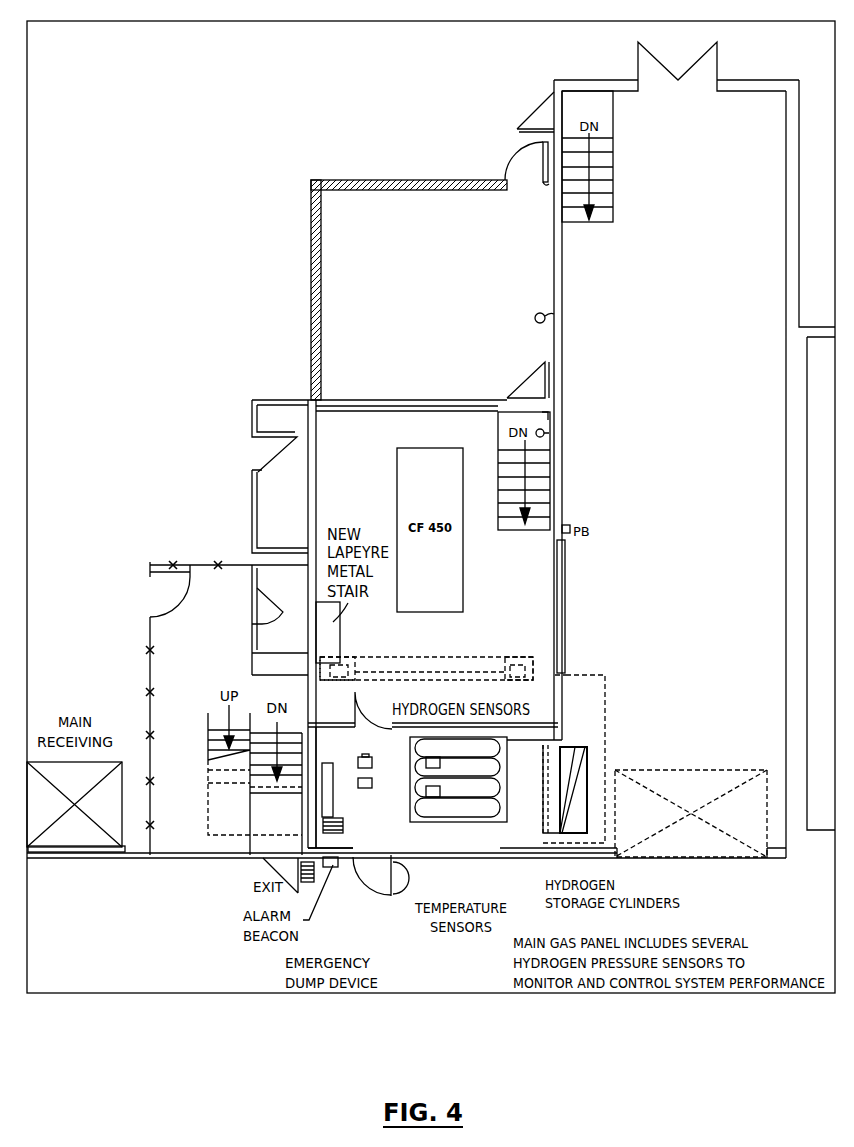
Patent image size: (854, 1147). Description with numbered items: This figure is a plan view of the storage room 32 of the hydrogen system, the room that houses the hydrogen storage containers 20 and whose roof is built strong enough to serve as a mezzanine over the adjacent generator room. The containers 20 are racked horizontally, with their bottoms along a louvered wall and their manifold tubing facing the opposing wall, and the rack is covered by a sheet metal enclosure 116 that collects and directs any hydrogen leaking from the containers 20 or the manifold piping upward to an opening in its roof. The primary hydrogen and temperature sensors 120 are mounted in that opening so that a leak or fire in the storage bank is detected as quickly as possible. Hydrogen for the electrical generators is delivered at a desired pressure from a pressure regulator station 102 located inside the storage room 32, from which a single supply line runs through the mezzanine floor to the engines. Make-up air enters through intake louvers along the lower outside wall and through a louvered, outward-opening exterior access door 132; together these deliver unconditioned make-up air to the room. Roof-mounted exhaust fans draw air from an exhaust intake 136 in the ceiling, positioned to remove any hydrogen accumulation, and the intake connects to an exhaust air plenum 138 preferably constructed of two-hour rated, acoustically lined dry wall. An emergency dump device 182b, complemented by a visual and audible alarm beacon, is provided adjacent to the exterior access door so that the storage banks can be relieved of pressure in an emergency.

The sheet metal enclosure 116 is at (513, 758).
The hydrogen storage container 20 is at (477, 822).
The primary hydrogen and temperature sensors 120 is at (433, 757).
The louvered exterior access door 132 is at (412, 848).
The pressure regulator station 102 is at (332, 765).
The emergency dump device 182b is at (340, 833).
The exhaust intake 136 is at (547, 787).
The exhaust air plenum 138 is at (585, 683).
The storage room 32 is at (540, 838).